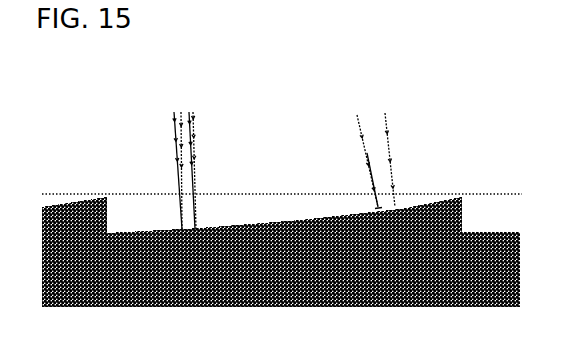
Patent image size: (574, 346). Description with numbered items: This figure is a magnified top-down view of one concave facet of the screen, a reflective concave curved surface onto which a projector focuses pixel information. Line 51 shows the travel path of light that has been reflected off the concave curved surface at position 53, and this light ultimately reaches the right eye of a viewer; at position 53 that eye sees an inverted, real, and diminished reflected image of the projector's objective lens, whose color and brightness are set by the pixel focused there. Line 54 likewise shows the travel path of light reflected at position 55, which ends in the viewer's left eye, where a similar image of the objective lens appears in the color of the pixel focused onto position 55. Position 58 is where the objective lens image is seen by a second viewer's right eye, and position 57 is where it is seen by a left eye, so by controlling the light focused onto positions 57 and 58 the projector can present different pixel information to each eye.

The line 51 is at (352, 132).
The position on concave curved surface 53 is at (395, 206).
The line 54 is at (352, 151).
The position on concave curved surface 55 is at (378, 207).
The position 57 is at (182, 228).
The position 58 is at (197, 228).